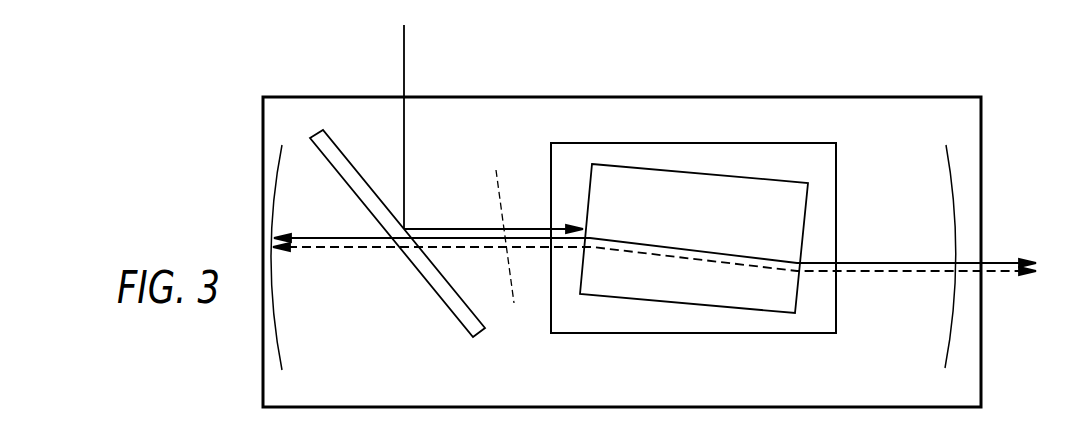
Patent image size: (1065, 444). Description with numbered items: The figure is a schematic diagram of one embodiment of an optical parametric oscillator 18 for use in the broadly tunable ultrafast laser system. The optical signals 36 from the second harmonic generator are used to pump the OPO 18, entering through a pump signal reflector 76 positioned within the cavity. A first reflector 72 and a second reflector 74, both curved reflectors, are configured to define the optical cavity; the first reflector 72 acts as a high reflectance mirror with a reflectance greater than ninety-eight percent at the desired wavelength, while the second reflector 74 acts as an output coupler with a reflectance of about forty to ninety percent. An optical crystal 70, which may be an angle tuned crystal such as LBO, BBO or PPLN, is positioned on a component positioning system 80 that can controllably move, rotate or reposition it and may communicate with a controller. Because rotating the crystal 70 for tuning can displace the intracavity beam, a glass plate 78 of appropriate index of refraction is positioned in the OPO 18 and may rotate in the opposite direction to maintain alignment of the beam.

The optical parametric oscillator 18 is at (825, 97).
The optical signals 36 is at (405, 75).
The optical crystal 70 is at (709, 233).
The first reflector 72 is at (280, 152).
The second reflector 74 is at (947, 163).
The pump signal reflector 76 is at (337, 145).
The glass plate 78 is at (498, 182).
The component positioning system 80 is at (777, 142).